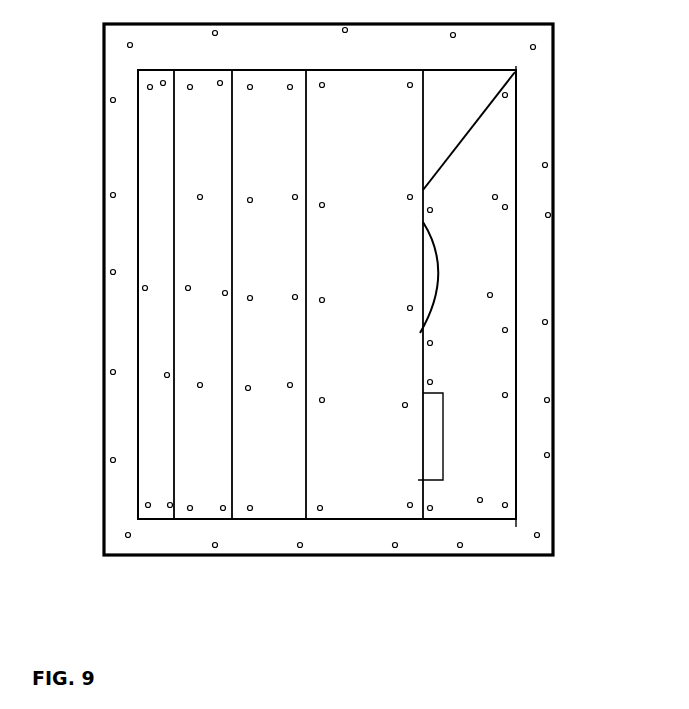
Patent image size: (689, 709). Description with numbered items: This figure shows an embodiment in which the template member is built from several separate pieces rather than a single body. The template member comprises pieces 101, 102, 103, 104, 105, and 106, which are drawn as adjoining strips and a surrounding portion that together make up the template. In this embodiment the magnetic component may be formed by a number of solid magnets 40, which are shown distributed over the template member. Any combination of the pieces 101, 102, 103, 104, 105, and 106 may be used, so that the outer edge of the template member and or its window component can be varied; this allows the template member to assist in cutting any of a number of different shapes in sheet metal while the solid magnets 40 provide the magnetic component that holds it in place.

The solid magnets 40 is at (545, 112).
The template member piece 101 is at (158, 484).
The template member piece 102 is at (206, 497).
The template member piece 103 is at (270, 497).
The template member piece 104 is at (367, 503).
The template member piece 105 is at (477, 502).
The template member piece 106 is at (538, 497).